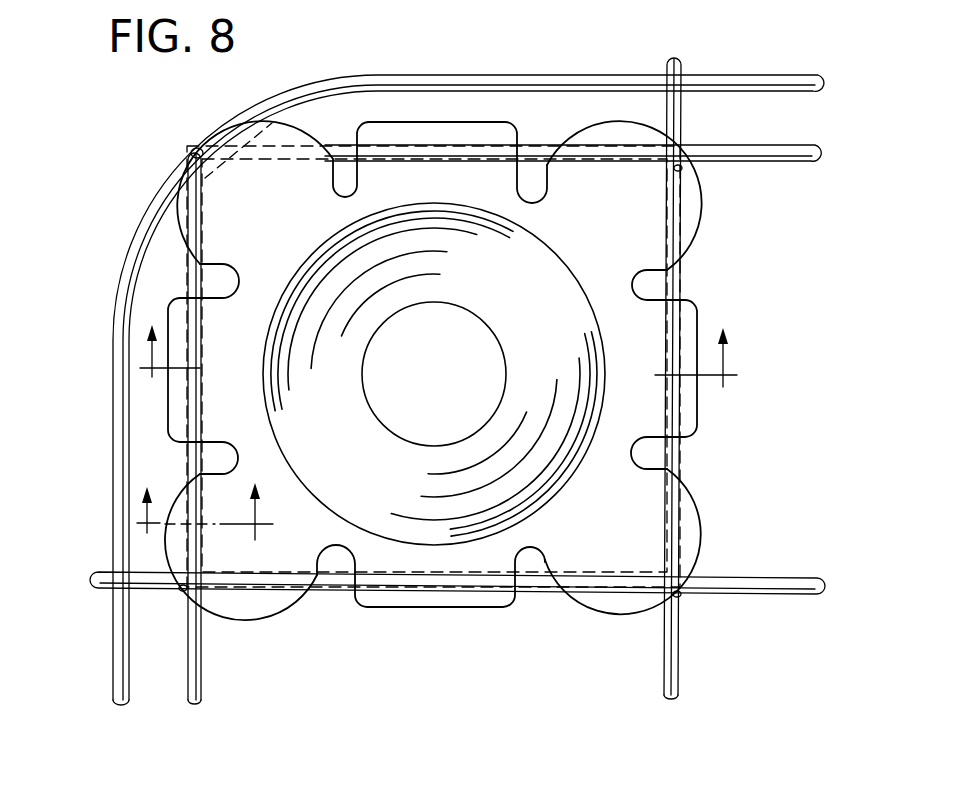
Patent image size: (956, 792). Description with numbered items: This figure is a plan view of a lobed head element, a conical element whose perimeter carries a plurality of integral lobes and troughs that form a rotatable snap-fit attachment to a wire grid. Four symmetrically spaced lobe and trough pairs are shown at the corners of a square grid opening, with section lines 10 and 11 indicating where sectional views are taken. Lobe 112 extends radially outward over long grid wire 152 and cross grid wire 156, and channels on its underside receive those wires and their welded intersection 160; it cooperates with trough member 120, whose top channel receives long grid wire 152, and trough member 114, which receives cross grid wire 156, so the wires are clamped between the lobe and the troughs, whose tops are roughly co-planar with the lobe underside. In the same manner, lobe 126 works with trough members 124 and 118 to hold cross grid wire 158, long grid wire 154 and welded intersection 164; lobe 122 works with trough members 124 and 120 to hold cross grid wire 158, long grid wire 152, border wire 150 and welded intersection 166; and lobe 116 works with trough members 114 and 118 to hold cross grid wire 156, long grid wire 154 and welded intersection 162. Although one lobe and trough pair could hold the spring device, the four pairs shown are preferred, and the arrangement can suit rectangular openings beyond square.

The section line 10- 10 is at (438, 370).
The section line 11- 11 is at (203, 522).
The lobe 112 is at (222, 617).
The trough member 114 is at (428, 610).
The lobe 116 is at (688, 541).
The trough member 118 is at (688, 411).
The trough member 120 is at (172, 416).
The lobe 122 is at (260, 125).
The trough member 124 is at (475, 128).
The lobe 126 is at (593, 185).
The border wire 150 is at (108, 360).
The long grid wire 152 is at (212, 680).
The long grid wire 154 is at (655, 682).
The cross grid wire 156 is at (767, 605).
The cross grid wire 158 is at (792, 170).
The welded intersection 160 is at (181, 590).
The welded intersection 162 is at (679, 595).
The welded intersection 164 is at (680, 170).
The welded intersection 166 is at (182, 153).